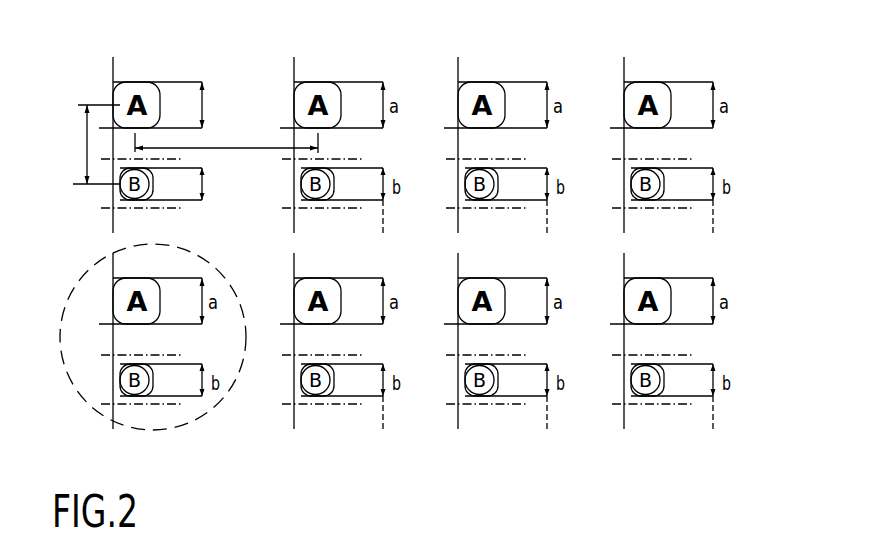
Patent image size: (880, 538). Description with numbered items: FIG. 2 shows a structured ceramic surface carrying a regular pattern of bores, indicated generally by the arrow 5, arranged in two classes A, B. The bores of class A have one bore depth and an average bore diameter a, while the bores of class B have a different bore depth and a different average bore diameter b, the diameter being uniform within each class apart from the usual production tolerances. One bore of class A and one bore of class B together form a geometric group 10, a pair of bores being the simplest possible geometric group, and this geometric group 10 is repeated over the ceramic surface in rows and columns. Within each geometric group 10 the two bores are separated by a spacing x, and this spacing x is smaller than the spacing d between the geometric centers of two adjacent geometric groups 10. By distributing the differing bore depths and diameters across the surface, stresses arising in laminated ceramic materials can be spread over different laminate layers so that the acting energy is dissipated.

The contact pad array pattern 5 is at (400, 214).
The geometric group 10 is at (67, 366).
The first class of bores A is at (136, 105).
The second class of bores B is at (136, 184).
The bore diameter of class A a is at (158, 105).
The bore diameter of class B b is at (170, 184).
The spacing of the bores within the geometric group x is at (93, 144).
The spacing of the geometric centers of adjacent geometric groups d is at (226, 137).